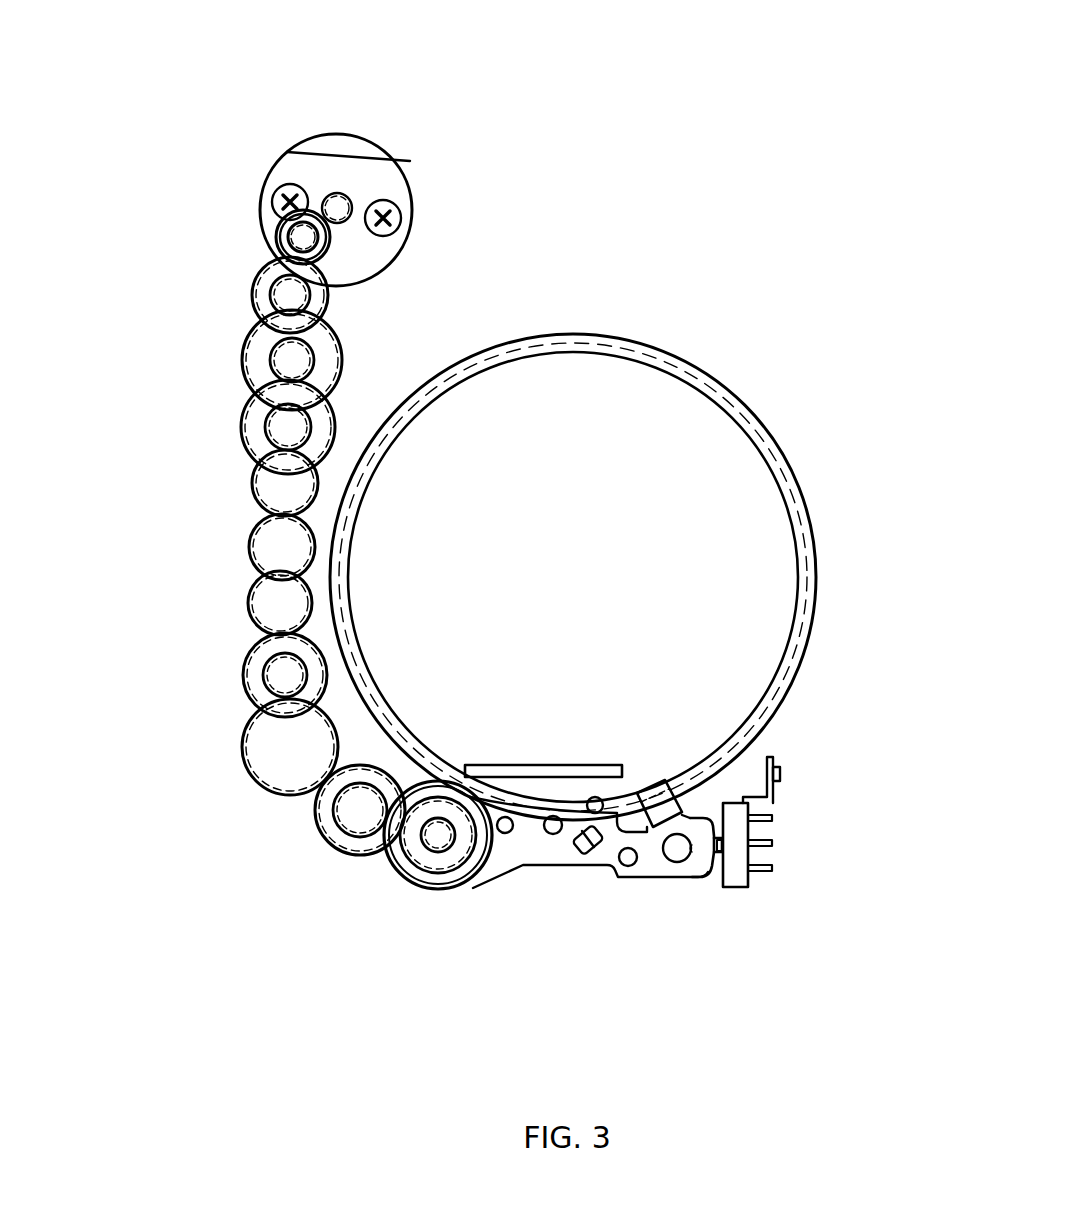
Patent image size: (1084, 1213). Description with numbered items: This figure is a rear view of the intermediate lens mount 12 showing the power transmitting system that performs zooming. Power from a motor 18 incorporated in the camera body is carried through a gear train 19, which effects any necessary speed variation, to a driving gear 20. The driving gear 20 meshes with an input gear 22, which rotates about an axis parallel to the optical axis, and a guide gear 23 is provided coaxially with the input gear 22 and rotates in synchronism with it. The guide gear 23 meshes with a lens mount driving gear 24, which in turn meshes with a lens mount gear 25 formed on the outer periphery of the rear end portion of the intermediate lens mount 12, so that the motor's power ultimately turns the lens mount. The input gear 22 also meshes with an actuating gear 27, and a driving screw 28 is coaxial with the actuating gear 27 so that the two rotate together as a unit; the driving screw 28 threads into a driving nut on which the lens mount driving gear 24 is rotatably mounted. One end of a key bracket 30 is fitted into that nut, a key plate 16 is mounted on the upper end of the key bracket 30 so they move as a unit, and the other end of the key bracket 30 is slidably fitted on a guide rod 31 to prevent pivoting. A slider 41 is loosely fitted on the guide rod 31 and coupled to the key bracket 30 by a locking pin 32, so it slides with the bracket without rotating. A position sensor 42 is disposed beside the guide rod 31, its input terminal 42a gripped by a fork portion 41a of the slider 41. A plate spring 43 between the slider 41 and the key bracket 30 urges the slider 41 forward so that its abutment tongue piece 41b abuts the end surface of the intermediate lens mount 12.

The intermediate lens mount 12 is at (763, 445).
The lens mount gear 25 is at (815, 593).
The motor 18 is at (300, 153).
The gear train 19 is at (230, 472).
The driving gear 20 is at (250, 747).
The guide gear 23 is at (343, 813).
The input gear 22 is at (340, 853).
The lens mount driving gear 24 is at (410, 886).
The actuating gear 27 is at (430, 874).
The driving screw 28 is at (450, 845).
The key plate 16 is at (552, 765).
The key bracket 30 is at (542, 857).
The locking pin 32 is at (627, 870).
The guide rod 31 is at (663, 877).
The slider 41 is at (716, 816).
The fork portion 41a is at (713, 856).
The abutment tongue piece 41b is at (647, 823).
The plate spring 43 is at (690, 874).
The position sensor 42 is at (808, 842).
The input terminal 42a is at (742, 857).